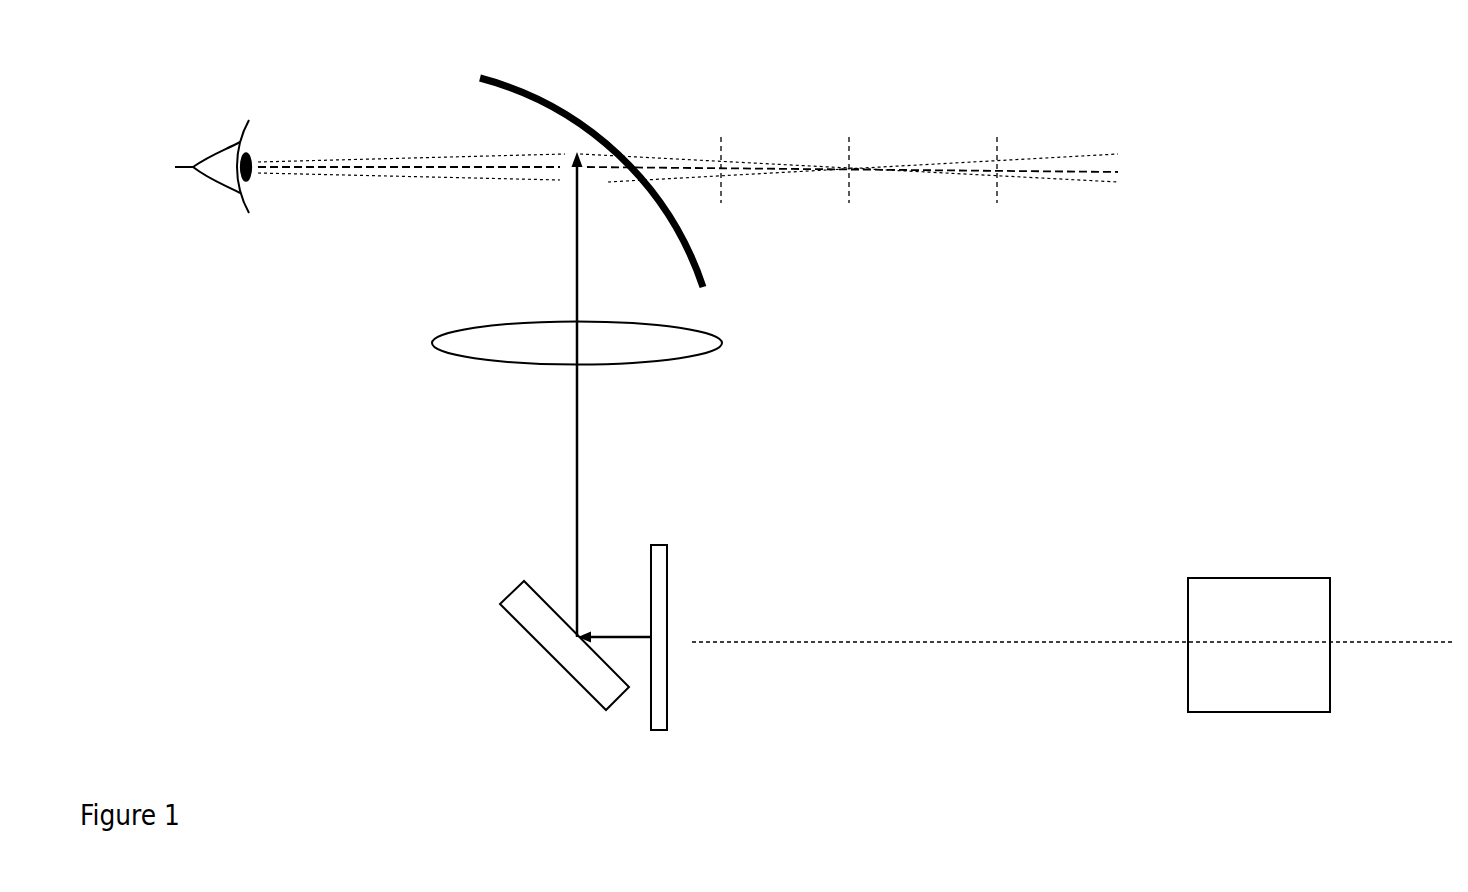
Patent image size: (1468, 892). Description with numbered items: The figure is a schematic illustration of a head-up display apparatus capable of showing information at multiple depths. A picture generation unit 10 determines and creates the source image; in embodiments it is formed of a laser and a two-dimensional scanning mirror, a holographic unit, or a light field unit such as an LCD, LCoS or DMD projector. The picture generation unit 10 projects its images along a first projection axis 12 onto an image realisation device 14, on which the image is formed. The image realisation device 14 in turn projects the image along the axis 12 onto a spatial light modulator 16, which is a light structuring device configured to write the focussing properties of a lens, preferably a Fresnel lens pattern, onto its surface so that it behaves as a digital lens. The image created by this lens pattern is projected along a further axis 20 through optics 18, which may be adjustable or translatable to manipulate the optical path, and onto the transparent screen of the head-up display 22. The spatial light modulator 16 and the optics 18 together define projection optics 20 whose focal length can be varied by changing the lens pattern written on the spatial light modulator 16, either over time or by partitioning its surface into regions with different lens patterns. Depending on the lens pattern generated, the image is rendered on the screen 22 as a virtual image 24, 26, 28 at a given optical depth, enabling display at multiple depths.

The picture generation unit 10 is at (1323, 613).
The first projection axis 12 is at (853, 642).
The image realisation device 14 is at (680, 548).
The spatial light modulator 16 is at (543, 665).
The optics 18 is at (725, 345).
The projection axis 20 is at (580, 430).
The transparent screen of the head-up display 22 is at (498, 75).
The virtual image 24 is at (725, 128).
The virtual image 26 is at (853, 128).
The virtual image 28 is at (1000, 128).